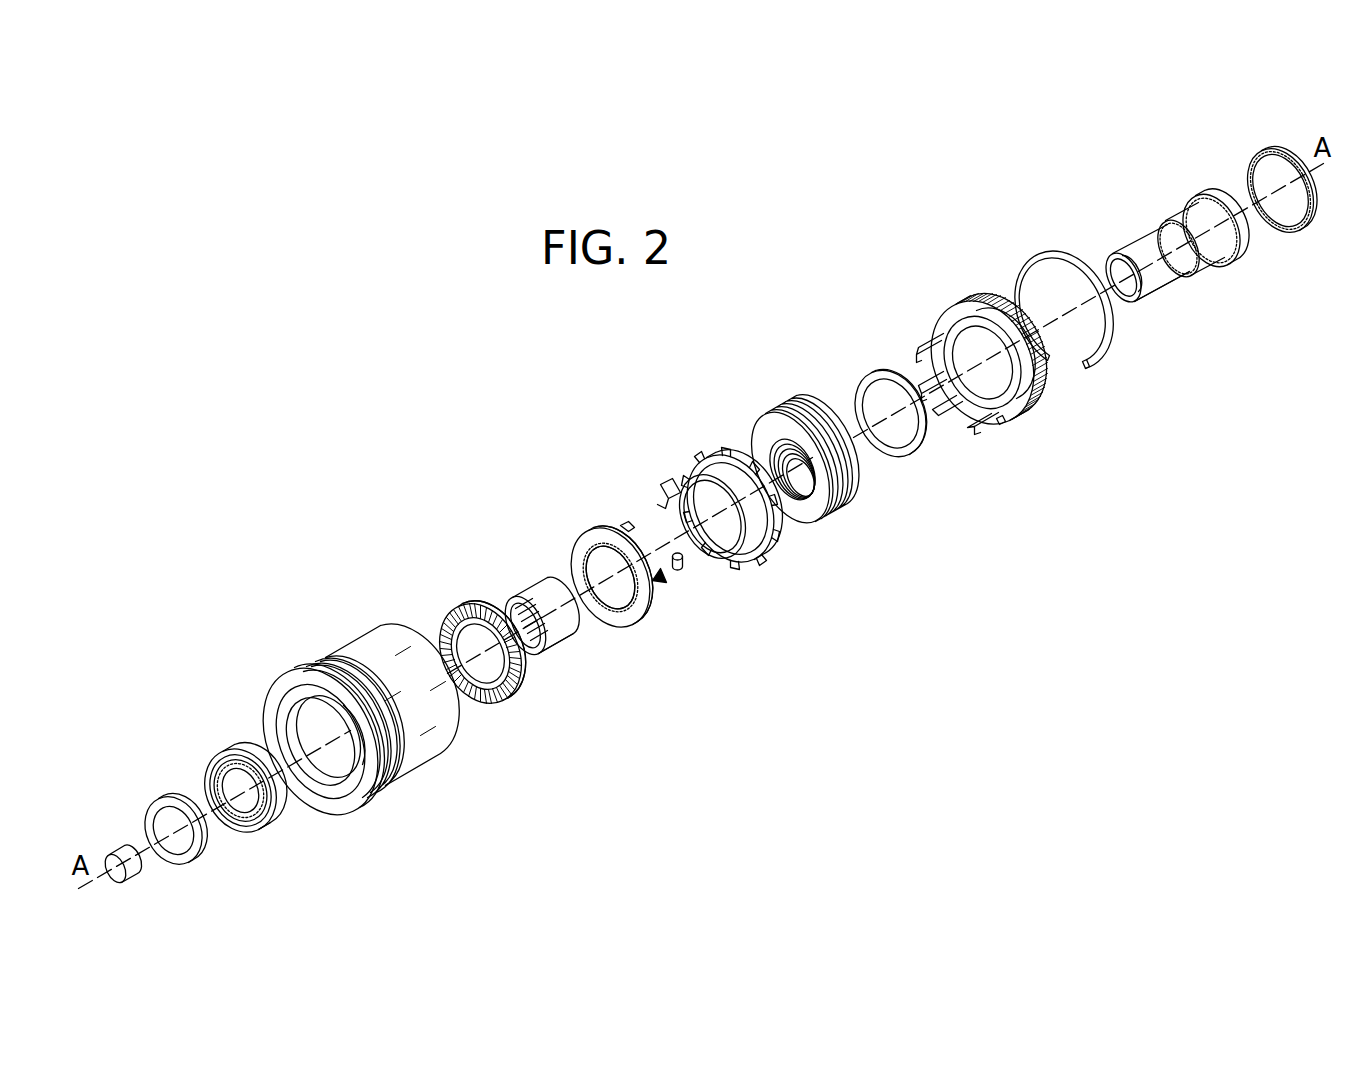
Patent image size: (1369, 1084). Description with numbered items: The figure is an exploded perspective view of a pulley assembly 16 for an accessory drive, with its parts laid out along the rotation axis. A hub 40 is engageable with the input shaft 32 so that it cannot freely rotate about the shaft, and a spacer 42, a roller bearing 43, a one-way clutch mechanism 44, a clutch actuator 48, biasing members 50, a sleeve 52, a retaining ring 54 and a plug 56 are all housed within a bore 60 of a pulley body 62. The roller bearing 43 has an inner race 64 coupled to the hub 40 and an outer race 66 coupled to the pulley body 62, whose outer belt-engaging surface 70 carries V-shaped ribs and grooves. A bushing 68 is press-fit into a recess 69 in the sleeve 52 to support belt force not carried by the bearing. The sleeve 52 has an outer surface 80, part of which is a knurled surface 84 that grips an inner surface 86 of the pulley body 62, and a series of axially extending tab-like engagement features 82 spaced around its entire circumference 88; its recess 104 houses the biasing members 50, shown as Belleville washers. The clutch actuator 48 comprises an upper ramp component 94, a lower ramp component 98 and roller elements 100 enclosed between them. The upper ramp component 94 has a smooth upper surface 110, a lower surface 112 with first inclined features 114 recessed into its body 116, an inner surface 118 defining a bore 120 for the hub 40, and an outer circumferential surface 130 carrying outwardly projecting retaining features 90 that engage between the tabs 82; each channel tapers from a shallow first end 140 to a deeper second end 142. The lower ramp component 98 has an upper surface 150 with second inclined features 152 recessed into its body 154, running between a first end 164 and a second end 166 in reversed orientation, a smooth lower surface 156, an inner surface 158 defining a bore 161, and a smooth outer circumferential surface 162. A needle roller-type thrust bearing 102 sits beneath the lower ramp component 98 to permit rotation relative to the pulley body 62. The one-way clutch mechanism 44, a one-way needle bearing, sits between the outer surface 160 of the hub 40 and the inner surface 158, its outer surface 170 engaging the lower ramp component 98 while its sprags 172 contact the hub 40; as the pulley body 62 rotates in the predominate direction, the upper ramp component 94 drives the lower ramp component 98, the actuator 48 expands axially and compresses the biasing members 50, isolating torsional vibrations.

The pulley assembly 16 is at (565, 787).
The input shaft 32 is at (123, 850).
The hub 40 is at (1175, 244).
The spacer 42 is at (190, 850).
The roller bearing 43 is at (268, 832).
The one-way clutch mechanism 44 is at (590, 633).
The clutch actuator 48 is at (645, 642).
The biasing members 50 is at (818, 450).
The sleeve 52 is at (968, 367).
The retaining ring 54 is at (1032, 254).
The plug 56 is at (1263, 148).
The bore 60 is at (349, 747).
The pulley body 62 is at (430, 763).
The inner race 64 is at (238, 776).
The outer race 66 is at (240, 748).
The bushing 68 is at (862, 375).
The recess 69 is at (913, 337).
The belt-engaging surface 70 is at (390, 787).
The outer surface 80 is at (1003, 423).
The engagement features 82 is at (937, 422).
The knurled surface 84 is at (1030, 395).
The inner surface 86 is at (325, 772).
The circumference 88 is at (980, 305).
The retaining features 90 is at (748, 499).
The upper ramp component 94 is at (733, 470).
The lower ramp component 98 is at (631, 564).
The roller element 100 is at (670, 550).
The thrust bearing 102 is at (450, 613).
The recess 104 is at (973, 433).
The upper surface 110 is at (763, 537).
The lower surface 112 is at (698, 560).
The first inclined features 114 is at (770, 555).
The body 116 is at (717, 443).
The inner surface 118 is at (690, 485).
The bore 120 is at (678, 562).
The outer circumferential surface 130 is at (775, 440).
The first end 140 is at (740, 565).
The second end 142 is at (777, 522).
The upper surface 150 is at (587, 520).
The second inclined features 152 is at (673, 565).
The body 154 is at (577, 560).
The lower surface 156 is at (648, 620).
The inner surface 158 is at (617, 527).
The outer surface 160 is at (1167, 270).
The bore 161 is at (613, 593).
The outer circumferential surface 162 is at (485, 700).
The first end 164 is at (655, 583).
The second end 166 is at (660, 520).
The outer surface 170 is at (527, 626).
The sprags 172 is at (537, 643).